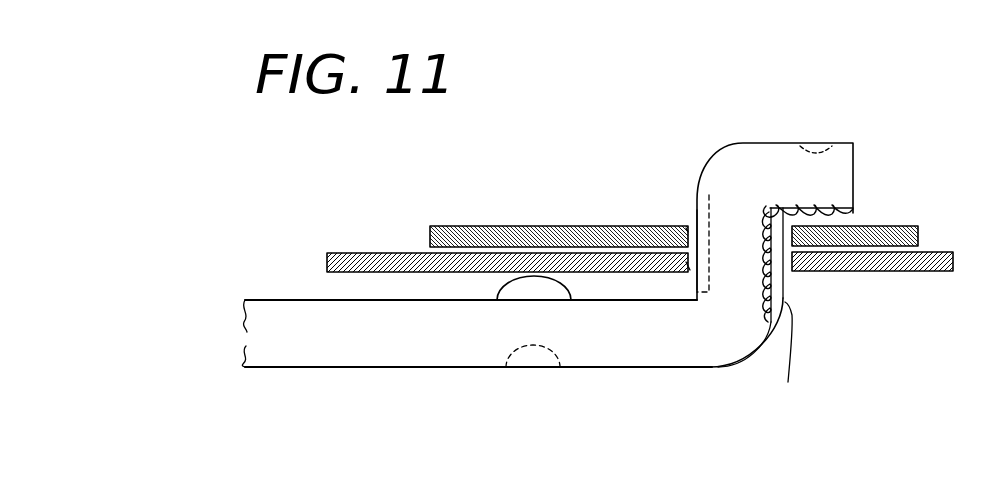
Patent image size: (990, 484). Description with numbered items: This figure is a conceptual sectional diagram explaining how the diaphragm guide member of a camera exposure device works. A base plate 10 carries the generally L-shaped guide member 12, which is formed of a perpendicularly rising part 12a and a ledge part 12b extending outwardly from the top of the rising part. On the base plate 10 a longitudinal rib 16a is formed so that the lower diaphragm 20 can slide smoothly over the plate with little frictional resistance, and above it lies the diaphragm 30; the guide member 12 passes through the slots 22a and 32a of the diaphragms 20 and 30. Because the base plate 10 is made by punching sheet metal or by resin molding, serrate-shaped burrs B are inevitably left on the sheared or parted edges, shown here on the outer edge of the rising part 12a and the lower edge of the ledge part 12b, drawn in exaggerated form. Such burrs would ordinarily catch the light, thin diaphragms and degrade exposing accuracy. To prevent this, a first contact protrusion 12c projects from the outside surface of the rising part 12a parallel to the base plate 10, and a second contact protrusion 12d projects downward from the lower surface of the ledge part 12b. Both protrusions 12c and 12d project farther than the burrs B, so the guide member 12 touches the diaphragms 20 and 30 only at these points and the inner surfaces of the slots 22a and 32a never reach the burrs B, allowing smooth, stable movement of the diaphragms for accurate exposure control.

The base plate 10 is at (378, 345).
The diaphragm guide member 12 is at (662, 44).
The rising part 12a is at (728, 225).
The ledge part 12b is at (800, 175).
The first contact protrusion 12c is at (783, 285).
The second contact protrusion 12d is at (813, 218).
The longitudinal rib 16a is at (523, 292).
The lower diaphragm 20 is at (362, 262).
The slot 22a is at (692, 266).
The diaphragm 30 is at (480, 232).
The slot 32a is at (690, 230).
The burrs B is at (812, 215).